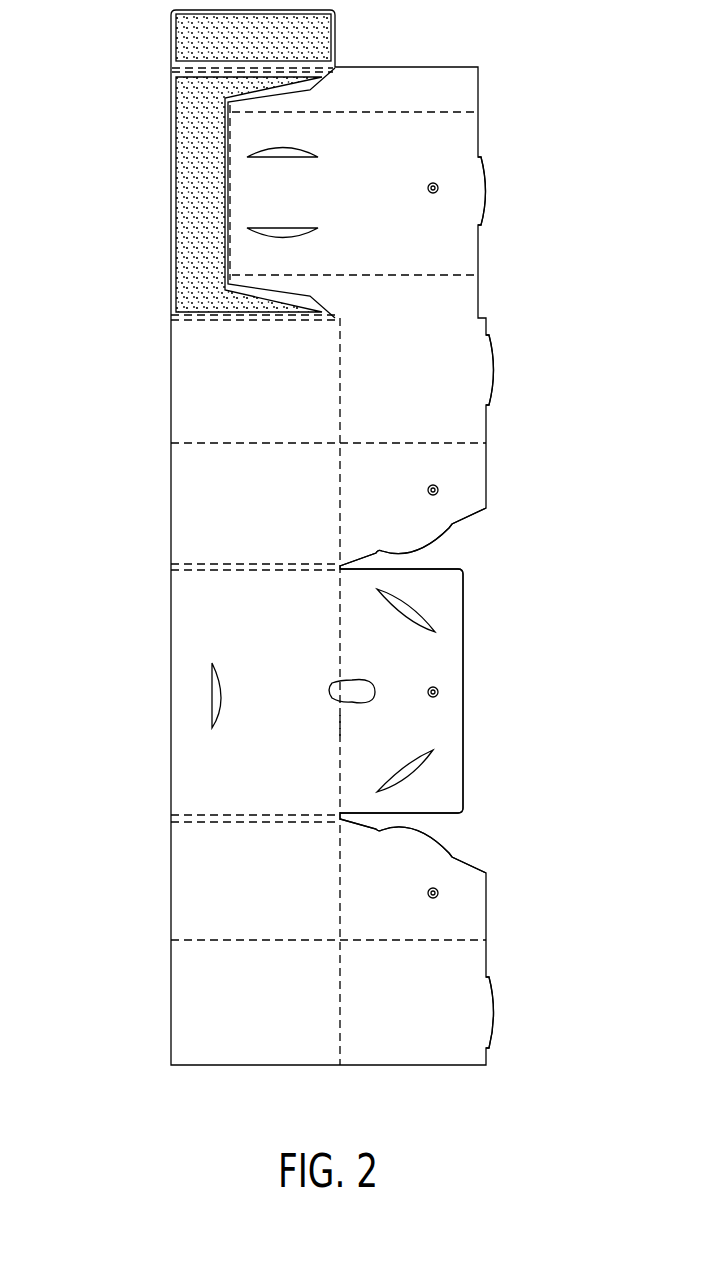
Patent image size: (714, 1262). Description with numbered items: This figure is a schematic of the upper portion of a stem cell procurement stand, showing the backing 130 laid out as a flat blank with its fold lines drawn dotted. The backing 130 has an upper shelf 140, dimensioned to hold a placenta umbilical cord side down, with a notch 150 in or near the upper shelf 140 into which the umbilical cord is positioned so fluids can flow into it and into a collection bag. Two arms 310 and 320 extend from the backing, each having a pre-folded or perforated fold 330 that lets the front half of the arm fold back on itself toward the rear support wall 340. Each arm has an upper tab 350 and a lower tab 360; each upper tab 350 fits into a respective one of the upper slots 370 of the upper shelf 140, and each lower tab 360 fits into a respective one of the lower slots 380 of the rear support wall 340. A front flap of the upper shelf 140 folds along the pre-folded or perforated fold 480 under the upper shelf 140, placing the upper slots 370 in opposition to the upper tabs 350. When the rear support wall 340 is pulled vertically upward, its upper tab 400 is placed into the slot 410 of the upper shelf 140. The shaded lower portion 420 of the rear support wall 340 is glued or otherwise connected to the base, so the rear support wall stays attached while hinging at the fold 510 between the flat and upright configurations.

The backing 130 is at (104, 170).
The upper shelf 140 is at (185, 797).
The notch 150 is at (335, 683).
The arm 310 is at (186, 410).
The arm 320 is at (177, 907).
The fold 330 is at (342, 370).
The rear support wall 340 is at (410, 80).
The upper tab 350 is at (452, 528).
The lower tab 360 is at (497, 370).
The upper slot 370 is at (427, 612).
The lower slot 380 is at (312, 152).
The upper tab 400 is at (489, 188).
The slot 410 is at (214, 712).
The lower portion 420 is at (182, 113).
The fold 480 is at (338, 727).
The fold 510 is at (232, 205).